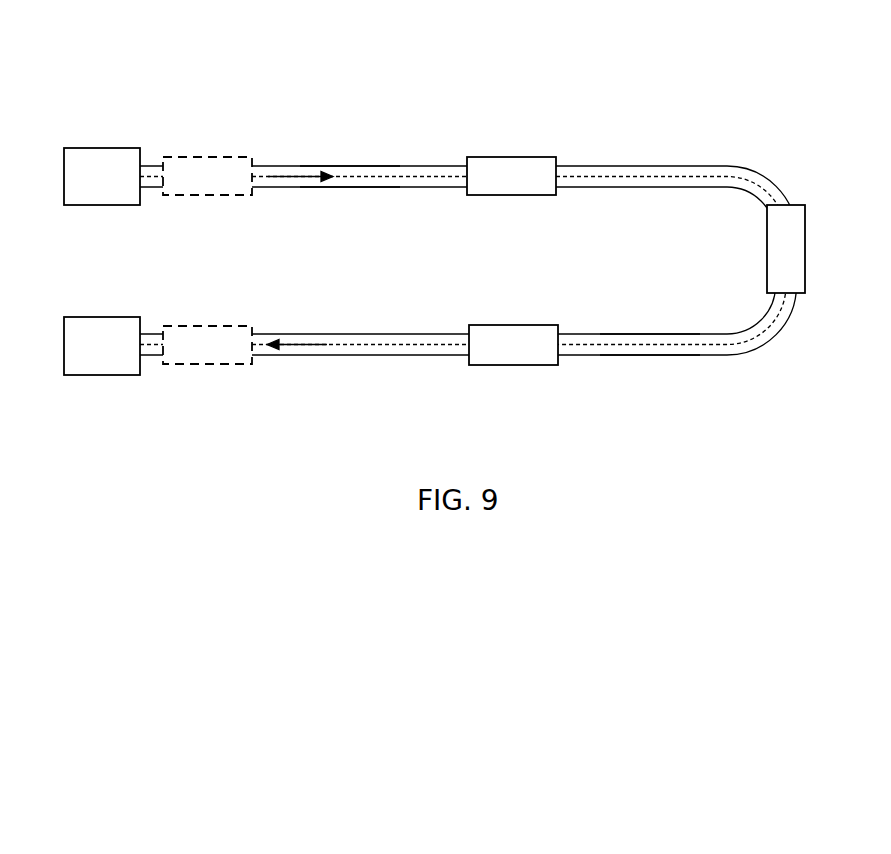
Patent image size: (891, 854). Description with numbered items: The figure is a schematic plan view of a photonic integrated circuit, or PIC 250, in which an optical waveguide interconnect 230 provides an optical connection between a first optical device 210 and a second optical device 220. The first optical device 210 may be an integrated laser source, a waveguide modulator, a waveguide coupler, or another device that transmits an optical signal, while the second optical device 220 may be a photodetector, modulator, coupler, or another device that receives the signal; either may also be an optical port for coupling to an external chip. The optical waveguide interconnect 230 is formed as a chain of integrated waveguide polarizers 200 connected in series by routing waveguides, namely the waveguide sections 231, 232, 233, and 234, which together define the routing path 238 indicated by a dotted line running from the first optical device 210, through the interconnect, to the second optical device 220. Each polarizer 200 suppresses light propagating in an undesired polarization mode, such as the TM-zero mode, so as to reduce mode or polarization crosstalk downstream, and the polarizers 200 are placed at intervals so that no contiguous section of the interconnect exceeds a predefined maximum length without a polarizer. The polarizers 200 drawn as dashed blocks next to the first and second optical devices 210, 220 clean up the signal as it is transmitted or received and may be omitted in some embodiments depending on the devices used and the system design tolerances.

The integrated waveguide polarizer 200 is at (230, 189).
The first optical device 210 is at (125, 190).
The second optical device 220 is at (125, 359).
The optical waveguide interconnect 230 is at (648, 104).
The waveguide section 231 is at (343, 188).
The waveguide section 232 is at (635, 188).
The waveguide section 233 is at (678, 356).
The waveguide section 234 is at (380, 356).
The routing path 238 is at (403, 165).
The photonic integrated circuit 250 is at (476, 51).